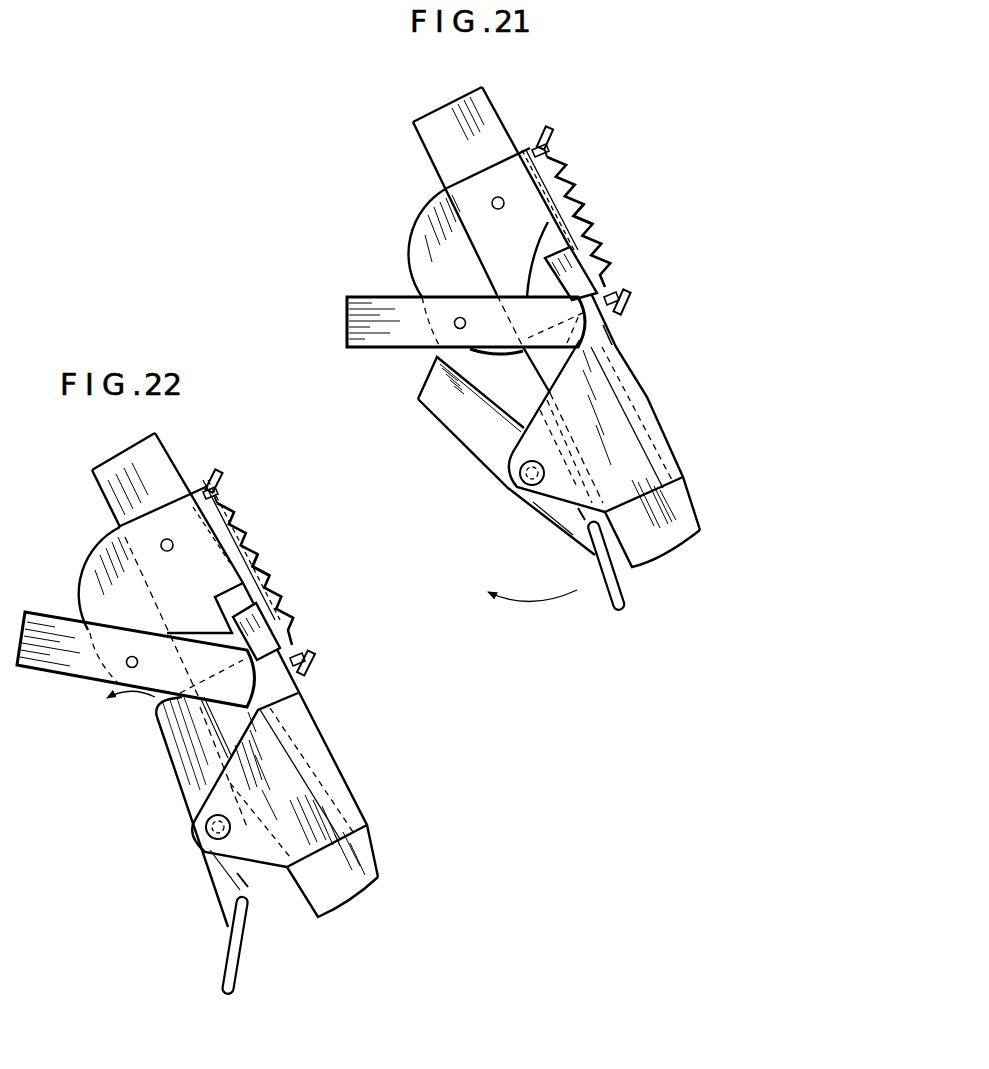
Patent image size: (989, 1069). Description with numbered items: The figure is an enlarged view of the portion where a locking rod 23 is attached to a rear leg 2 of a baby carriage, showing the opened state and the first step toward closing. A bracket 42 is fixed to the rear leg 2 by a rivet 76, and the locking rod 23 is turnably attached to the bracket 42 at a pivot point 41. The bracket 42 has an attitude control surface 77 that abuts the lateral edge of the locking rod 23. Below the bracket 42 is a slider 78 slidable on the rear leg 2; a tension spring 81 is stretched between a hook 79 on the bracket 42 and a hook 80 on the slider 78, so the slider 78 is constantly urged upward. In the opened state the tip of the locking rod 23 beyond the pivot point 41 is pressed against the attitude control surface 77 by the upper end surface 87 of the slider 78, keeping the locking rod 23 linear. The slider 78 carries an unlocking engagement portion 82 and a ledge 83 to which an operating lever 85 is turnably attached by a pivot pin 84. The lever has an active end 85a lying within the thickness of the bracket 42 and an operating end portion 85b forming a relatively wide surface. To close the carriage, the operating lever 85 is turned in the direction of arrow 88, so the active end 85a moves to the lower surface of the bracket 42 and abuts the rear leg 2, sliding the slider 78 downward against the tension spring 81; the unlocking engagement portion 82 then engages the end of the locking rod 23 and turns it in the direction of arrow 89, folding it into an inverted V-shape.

In FIG. 21, the rear leg 2 is at (697, 533).
In FIG. 22, the rear leg 2 is at (362, 860).
In FIG. 21, the locking rod 23 is at (378, 297).
In FIG. 22, the locking rod 23 is at (45, 612).
In FIG. 21, the pivot point 41 is at (456, 327).
In FIG. 22, the pivot point 41 is at (127, 665).
In FIG. 21, the bracket 42 is at (413, 212).
In FIG. 22, the bracket 42 is at (85, 557).
In FIG. 21, the rivet 76 is at (498, 196).
In FIG. 21, the attitude control surface 77 is at (558, 215).
In FIG. 22, the attitude control surface 77 is at (213, 635).
In FIG. 21, the slider 78 is at (626, 306).
In FIG. 22, the slider 78 is at (342, 768).
In FIG. 21, the hook 79 is at (548, 131).
In FIG. 21, the hook 80 is at (631, 298).
In FIG. 21, the tension spring 81 is at (600, 245).
In FIG. 22, the tension spring 81 is at (272, 587).
In FIG. 21, the unlocking engagement portion 82 is at (585, 282).
In FIG. 22, the unlocking engagement portion 82 is at (260, 612).
In FIG. 21, the ledge 83 is at (541, 490).
In FIG. 21, the pivot pin 84 is at (530, 475).
In FIG. 21, the operating lever 85 is at (499, 500).
In FIG. 22, the operating lever 85 is at (169, 846).
In FIG. 21, the active end 85a is at (420, 403).
In FIG. 22, the active end 85a is at (168, 720).
In FIG. 21, the operating end portion 85b is at (607, 588).
In FIG. 21, the upper end surface 87 is at (615, 335).
In FIG. 21, the arrow 88 is at (510, 600).
In FIG. 22, the arrow 89 is at (120, 707).